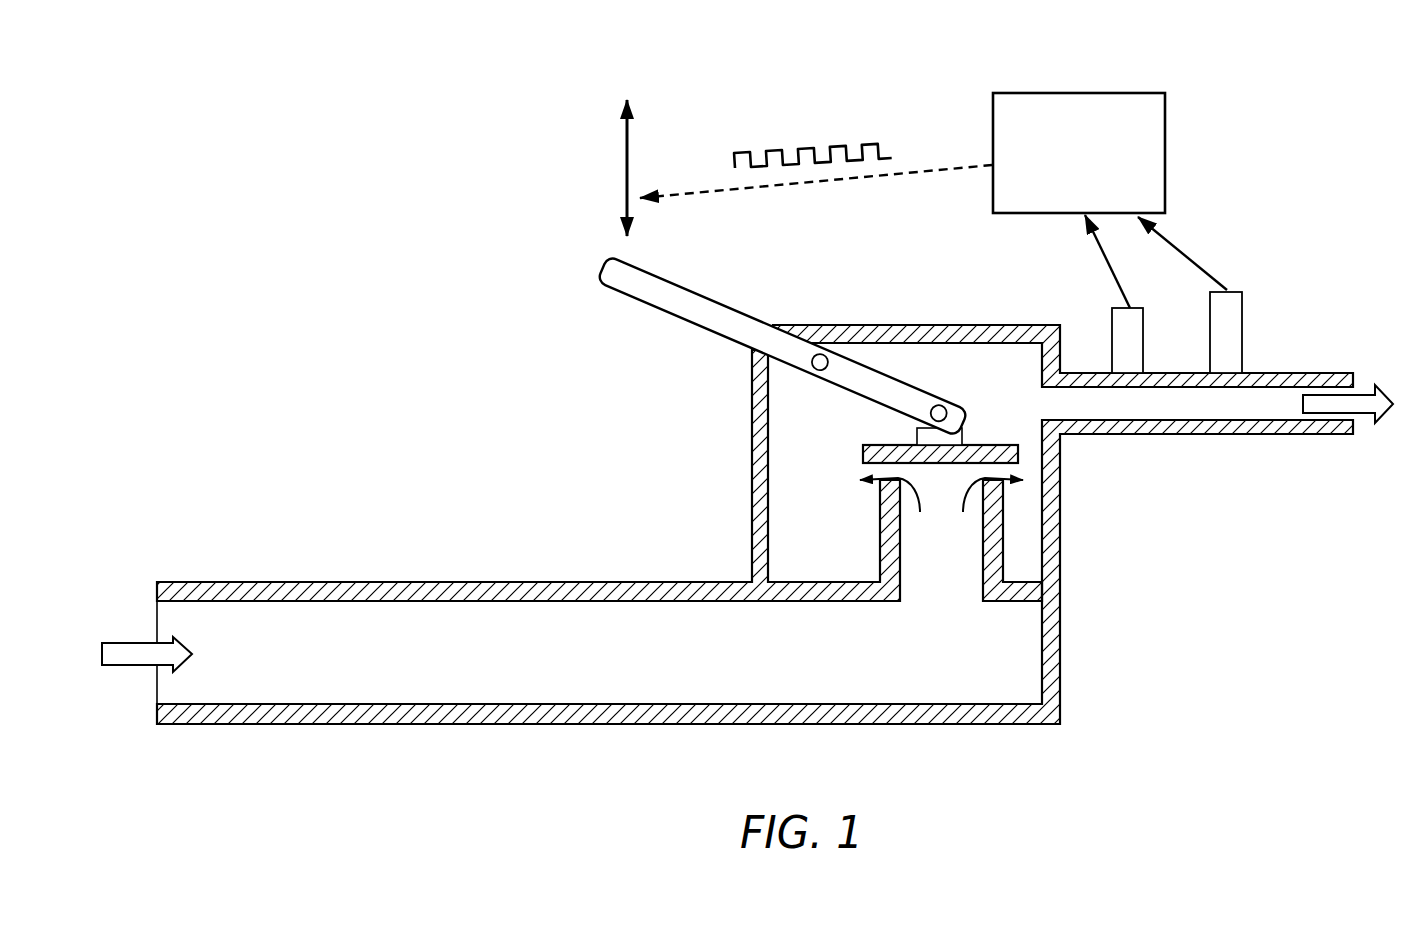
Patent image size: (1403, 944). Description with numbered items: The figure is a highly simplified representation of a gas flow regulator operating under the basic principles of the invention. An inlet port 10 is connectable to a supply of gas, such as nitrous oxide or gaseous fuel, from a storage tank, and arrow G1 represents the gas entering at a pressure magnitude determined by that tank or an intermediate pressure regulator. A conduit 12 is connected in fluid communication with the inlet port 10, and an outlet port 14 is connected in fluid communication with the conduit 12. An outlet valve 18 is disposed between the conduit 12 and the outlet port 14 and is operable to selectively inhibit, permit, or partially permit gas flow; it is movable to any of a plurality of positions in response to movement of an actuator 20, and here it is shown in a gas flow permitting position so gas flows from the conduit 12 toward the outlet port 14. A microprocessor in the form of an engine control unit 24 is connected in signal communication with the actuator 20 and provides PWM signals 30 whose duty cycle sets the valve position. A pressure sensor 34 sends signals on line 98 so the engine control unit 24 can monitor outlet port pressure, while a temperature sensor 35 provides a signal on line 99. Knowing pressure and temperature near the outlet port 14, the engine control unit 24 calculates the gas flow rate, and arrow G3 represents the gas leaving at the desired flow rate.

The inlet port 10 is at (165, 622).
The conduit 12 is at (1020, 658).
The outlet port 14 is at (1345, 426).
The outlet valve 18 is at (995, 444).
The actuator 20 is at (660, 298).
The engine control unit 24 is at (1158, 142).
The PWM signal 30 is at (759, 160).
The pressure sensor 34 is at (1236, 318).
The temperature sensor 35 is at (1121, 325).
The line 98 is at (1193, 254).
The line 99 is at (1116, 278).
The gas flow G1 is at (130, 666).
The gas flow G3 is at (1362, 394).